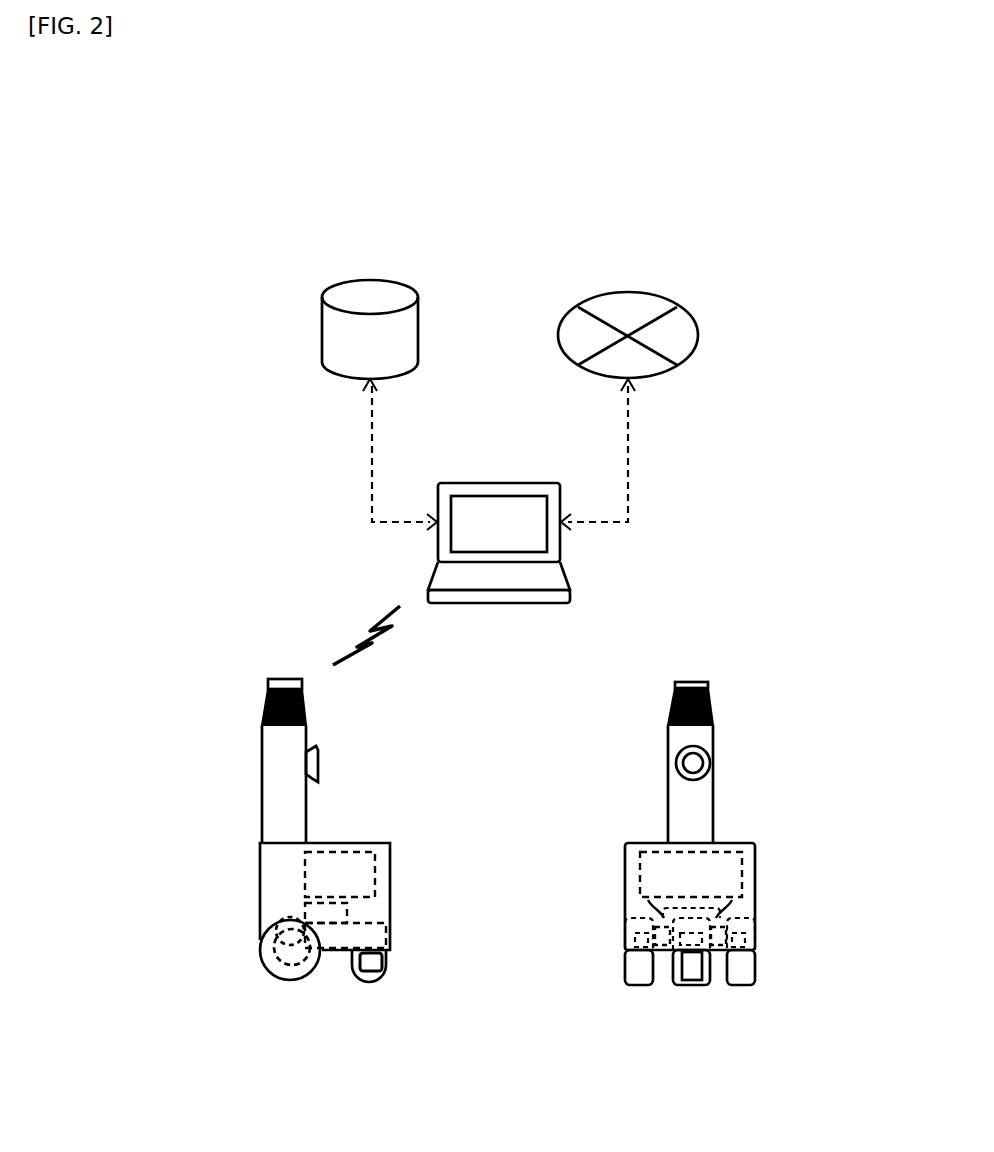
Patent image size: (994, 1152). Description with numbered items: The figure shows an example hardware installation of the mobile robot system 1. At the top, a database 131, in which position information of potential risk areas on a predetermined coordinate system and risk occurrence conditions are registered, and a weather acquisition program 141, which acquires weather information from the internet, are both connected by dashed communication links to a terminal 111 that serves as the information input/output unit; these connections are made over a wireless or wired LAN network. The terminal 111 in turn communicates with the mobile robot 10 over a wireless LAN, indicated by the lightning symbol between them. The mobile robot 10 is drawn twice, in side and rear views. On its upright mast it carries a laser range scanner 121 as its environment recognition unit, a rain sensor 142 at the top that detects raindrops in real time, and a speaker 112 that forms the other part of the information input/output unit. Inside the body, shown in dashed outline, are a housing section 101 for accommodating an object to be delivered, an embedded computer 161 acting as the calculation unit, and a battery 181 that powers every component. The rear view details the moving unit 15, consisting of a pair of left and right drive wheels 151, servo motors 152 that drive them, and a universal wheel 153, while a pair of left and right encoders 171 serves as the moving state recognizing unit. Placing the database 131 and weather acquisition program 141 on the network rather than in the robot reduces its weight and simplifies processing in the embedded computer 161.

The mobile robot system 1 is at (226, 199).
The mobile robot 10 is at (317, 796).
The housing section 101 is at (370, 852).
The terminal 111 is at (521, 484).
The speaker 112 is at (708, 757).
The laser range scanner 121 is at (303, 700).
The database 131 is at (350, 291).
The weather acquisition program 141 is at (677, 317).
The rain sensor 142 is at (268, 680).
The moving unit 15 is at (688, 1027).
The drive wheels 151 is at (640, 985).
The servo motors 152 is at (626, 965).
The universal wheel 153 is at (691, 993).
The embedded computer 161 is at (348, 906).
The encoders 171 is at (662, 918).
The battery 181 is at (377, 928).